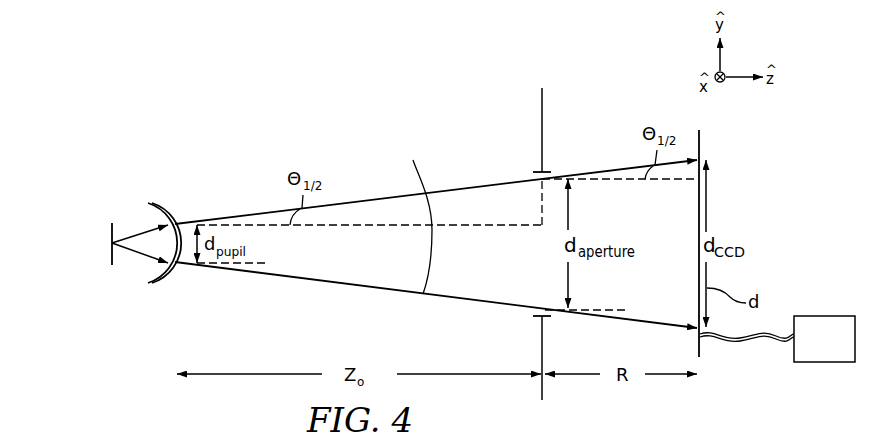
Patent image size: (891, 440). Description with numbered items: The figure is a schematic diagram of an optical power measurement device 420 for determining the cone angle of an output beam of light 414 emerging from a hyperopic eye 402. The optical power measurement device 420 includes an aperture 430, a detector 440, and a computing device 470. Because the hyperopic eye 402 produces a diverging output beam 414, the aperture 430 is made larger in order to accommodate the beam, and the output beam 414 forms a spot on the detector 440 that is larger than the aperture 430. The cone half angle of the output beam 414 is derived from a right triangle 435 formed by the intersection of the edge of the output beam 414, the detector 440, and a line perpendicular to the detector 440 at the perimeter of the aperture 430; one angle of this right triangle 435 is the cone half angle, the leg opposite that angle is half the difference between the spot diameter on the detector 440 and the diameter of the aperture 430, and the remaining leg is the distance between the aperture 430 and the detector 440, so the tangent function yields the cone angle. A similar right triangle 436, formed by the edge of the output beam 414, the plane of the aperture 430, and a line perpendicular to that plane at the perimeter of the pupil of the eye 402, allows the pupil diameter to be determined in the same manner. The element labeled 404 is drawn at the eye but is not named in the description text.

The hyperopic eye 402 is at (162, 217).
The light source 404 is at (111, 231).
The output beam of light 414 is at (393, 197).
The optical power measurement device 420 is at (632, 67).
The aperture 430 is at (544, 105).
The right triangle 435 is at (613, 175).
The right triangle 436 is at (472, 202).
The detector 440 is at (701, 147).
The computing device 470 is at (841, 350).